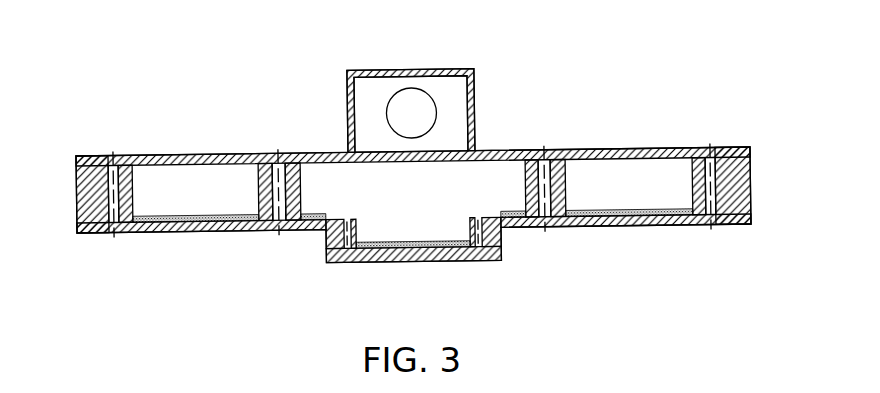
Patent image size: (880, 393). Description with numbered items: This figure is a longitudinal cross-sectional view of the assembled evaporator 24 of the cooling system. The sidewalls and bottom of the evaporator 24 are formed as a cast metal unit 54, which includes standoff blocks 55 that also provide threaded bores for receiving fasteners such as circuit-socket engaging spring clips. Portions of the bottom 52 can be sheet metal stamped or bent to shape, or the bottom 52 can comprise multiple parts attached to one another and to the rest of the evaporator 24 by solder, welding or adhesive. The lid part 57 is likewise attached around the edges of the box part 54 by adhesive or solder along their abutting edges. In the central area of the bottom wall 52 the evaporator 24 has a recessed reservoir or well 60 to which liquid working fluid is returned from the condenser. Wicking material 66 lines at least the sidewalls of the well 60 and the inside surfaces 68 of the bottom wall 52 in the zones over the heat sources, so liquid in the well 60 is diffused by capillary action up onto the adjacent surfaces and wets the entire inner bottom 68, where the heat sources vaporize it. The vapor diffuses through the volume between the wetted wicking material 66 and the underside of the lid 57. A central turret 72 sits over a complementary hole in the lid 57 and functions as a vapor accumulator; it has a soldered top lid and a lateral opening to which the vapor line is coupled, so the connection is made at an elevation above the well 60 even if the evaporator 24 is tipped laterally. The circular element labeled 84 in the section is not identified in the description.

The evaporator 24 is at (78, 234).
The bottom wall 52 is at (690, 230).
The cast metal unit 54 is at (76, 181).
The standoff blocks 55 is at (347, 118).
The lid part 57 is at (487, 149).
The well 60 is at (455, 210).
The wicking material 66 is at (194, 221).
The inside surfaces 68 is at (560, 230).
The central turret 72 is at (370, 98).
The sensing element 84 is at (413, 89).